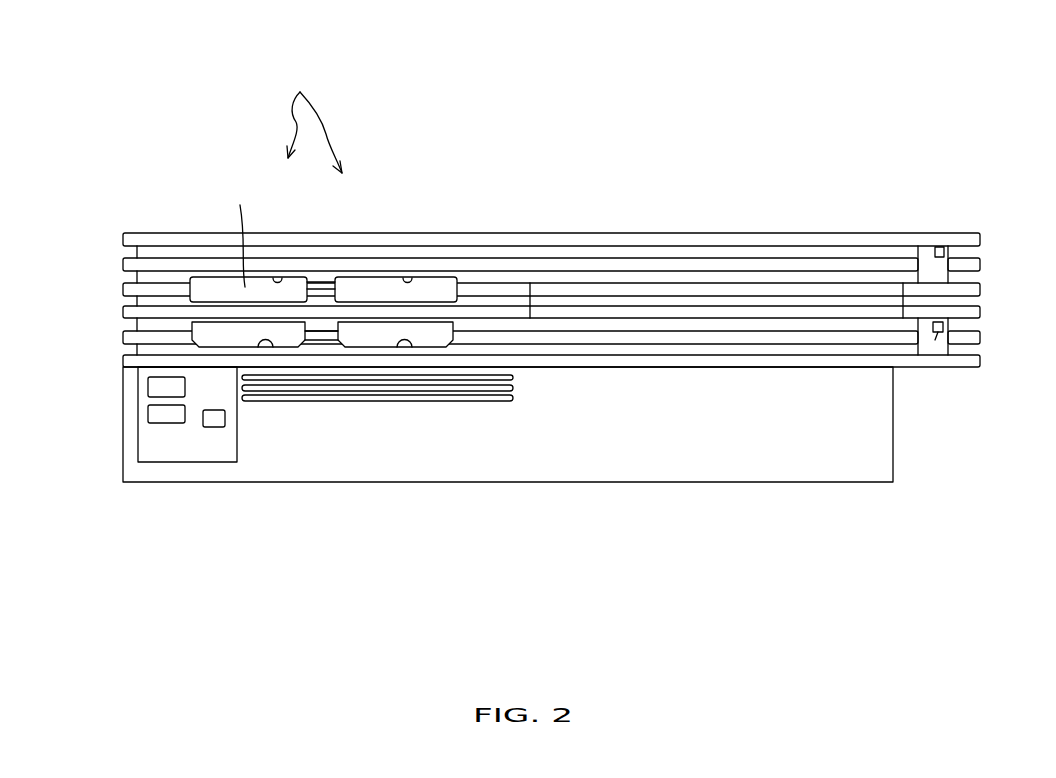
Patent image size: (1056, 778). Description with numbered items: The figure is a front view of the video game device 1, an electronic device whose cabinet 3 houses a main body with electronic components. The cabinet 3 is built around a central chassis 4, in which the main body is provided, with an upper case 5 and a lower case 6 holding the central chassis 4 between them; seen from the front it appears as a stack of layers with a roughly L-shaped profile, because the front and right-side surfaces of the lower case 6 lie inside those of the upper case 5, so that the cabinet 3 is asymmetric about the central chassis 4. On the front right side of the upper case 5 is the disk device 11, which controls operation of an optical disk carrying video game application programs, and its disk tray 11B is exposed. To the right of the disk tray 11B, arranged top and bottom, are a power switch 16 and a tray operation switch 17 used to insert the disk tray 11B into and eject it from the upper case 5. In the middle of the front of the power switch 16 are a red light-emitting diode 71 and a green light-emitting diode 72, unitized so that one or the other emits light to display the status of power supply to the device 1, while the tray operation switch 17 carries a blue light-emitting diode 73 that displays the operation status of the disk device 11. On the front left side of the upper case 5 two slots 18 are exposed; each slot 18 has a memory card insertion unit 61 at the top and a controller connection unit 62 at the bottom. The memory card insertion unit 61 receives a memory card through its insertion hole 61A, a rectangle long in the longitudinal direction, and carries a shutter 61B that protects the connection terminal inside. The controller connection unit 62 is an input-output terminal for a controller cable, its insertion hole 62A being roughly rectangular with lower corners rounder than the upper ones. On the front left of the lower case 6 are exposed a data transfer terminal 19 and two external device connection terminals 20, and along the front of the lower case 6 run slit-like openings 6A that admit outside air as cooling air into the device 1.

The video game device 1 is at (222, 140).
The cabinet 3 is at (728, 263).
The central chassis 4 is at (937, 367).
The upper case 5 is at (808, 262).
The lower case 6 is at (770, 465).
The slit-like openings 6A is at (477, 388).
The disk device 11 is at (647, 302).
The disk tray 11B is at (857, 292).
The power switch 16 is at (935, 248).
The tray operation switch 17 is at (950, 325).
The slots 18 is at (314, 116).
The data transfer terminal 19 is at (215, 417).
The external device connection terminals 20 is at (167, 388).
The memory card insertion unit 61 is at (298, 287).
The insertion hole 61A is at (277, 278).
The shutter 61B is at (442, 287).
The controller connection unit 62 is at (293, 342).
The insertion hole 62A is at (272, 347).
The red light-emitting diode 71 is at (950, 262).
The green light-emitting diode 72 is at (942, 248).
The blue light-emitting diode 73 is at (925, 365).